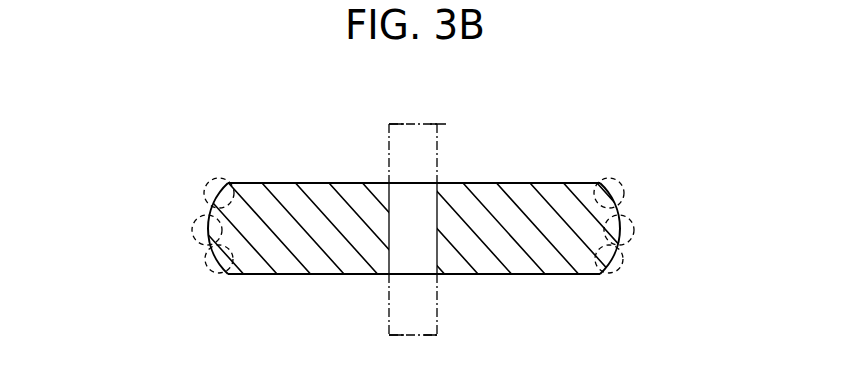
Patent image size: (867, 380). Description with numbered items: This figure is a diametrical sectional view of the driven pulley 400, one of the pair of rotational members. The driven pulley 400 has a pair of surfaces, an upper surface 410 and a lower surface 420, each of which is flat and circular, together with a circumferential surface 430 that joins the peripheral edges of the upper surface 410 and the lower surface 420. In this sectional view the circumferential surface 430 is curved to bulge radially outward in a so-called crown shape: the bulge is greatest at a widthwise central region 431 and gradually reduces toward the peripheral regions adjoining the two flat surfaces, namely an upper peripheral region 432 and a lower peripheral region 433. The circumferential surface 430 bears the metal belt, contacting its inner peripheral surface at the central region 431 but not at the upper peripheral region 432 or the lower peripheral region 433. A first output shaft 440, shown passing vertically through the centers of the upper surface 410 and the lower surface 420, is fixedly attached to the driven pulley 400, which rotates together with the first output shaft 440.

The driven pulley 400 is at (562, 137).
The upper surface 410 is at (313, 183).
The lower surface 420 is at (313, 275).
The circumferential surface 430 is at (103, 155).
The widthwise central region 431 is at (196, 221).
The upper peripheral region 432 is at (210, 192).
The lower peripheral region 433 is at (206, 262).
The first output shaft 440 is at (445, 128).